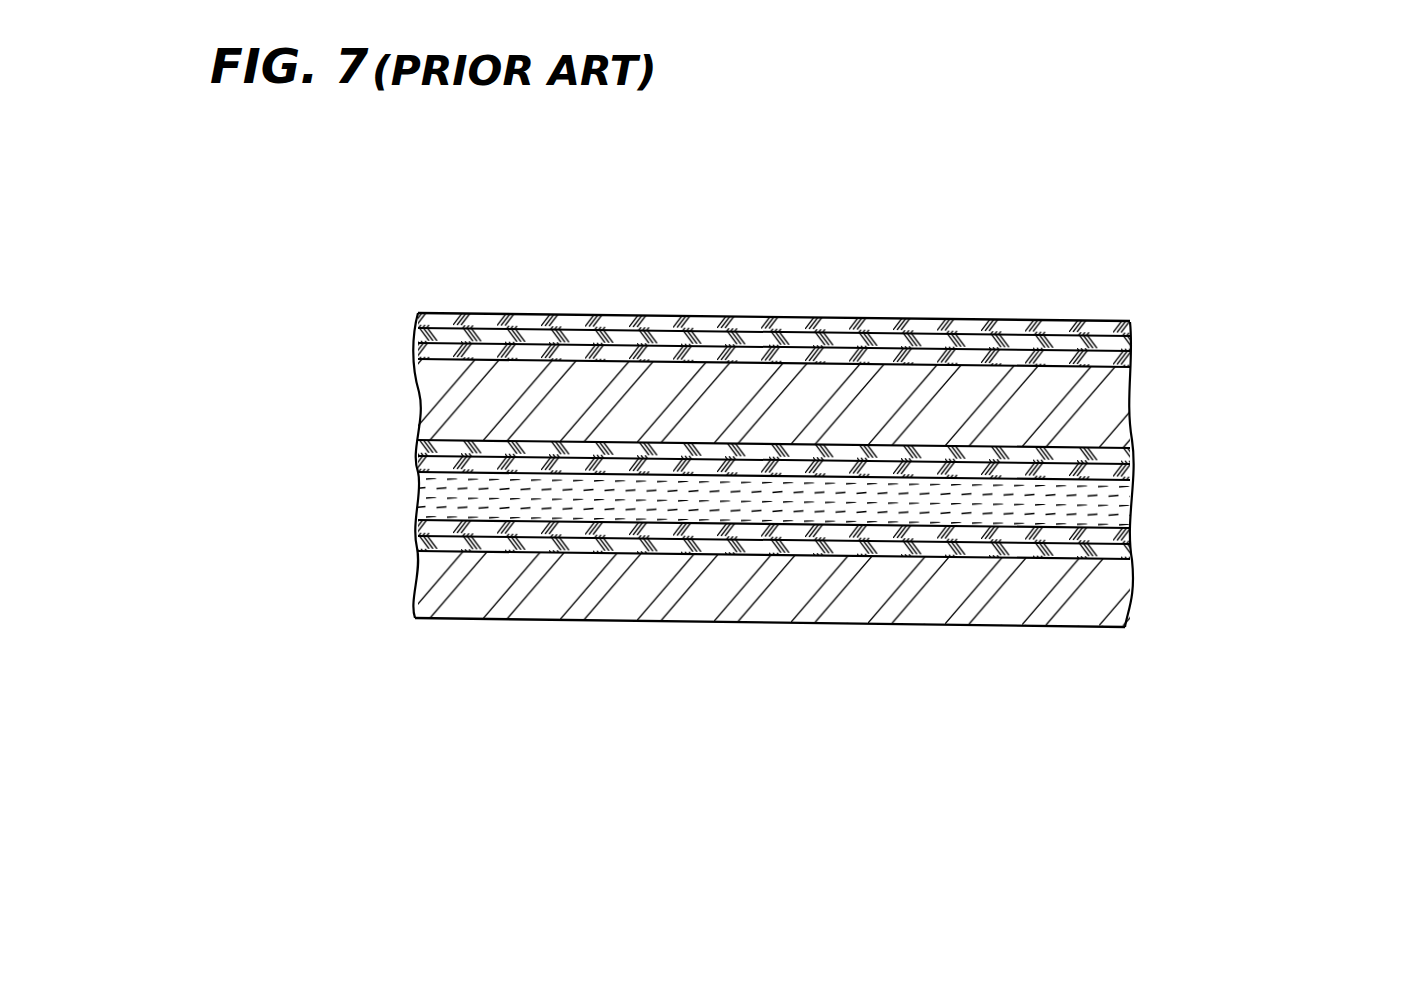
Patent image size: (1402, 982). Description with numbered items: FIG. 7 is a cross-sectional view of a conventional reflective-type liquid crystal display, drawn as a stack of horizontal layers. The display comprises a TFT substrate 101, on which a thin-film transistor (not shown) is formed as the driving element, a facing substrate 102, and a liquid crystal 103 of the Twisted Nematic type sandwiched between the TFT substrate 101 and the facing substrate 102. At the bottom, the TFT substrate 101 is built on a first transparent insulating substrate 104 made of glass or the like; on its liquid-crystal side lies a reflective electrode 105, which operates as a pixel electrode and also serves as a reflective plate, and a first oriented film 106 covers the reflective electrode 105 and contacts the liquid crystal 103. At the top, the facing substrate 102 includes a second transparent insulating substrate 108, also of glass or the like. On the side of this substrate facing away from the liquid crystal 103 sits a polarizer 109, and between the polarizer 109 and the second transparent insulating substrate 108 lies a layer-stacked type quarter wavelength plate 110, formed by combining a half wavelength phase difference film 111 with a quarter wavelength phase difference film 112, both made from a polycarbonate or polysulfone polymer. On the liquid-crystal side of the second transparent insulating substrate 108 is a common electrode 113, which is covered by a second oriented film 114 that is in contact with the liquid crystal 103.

The TFT substrate 101 is at (702, 641).
The facing substrate 102 is at (789, 381).
The liquid crystal 103 is at (430, 485).
The first transparent insulating substrate 104 is at (1042, 593).
The reflective electrode 105 is at (1130, 553).
The first oriented film 106 is at (1130, 542).
The second transparent insulating substrate 108 is at (1130, 410).
The polarizer 109 is at (1007, 326).
The layer-stacked type ¼ wavelength plate 110 is at (908, 313).
The ½ wavelength phase difference film 111 is at (1137, 338).
The ¼ wavelength phase difference film 112 is at (1135, 365).
The common electrode 113 is at (1130, 455).
The second oriented film 114 is at (1130, 472).